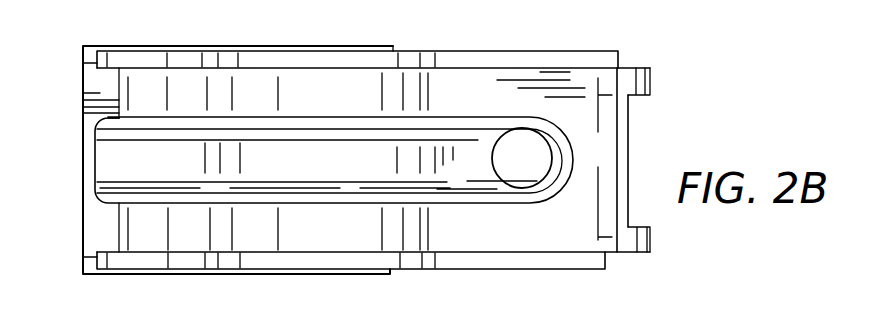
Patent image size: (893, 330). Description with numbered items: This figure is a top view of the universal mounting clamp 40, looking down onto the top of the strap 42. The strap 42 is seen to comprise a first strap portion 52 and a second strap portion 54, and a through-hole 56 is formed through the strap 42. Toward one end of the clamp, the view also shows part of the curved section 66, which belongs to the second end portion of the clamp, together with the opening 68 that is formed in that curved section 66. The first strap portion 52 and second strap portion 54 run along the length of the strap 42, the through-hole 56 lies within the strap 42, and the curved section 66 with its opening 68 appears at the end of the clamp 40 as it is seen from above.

The universal mounting clamp 40 is at (55, 122).
The strap 42 is at (473, 20).
The first strap portion 52 is at (168, 145).
The second strap portion 54 is at (475, 152).
The through-hole 56 is at (515, 183).
The curved section 66 is at (642, 62).
The opening 68 is at (630, 160).